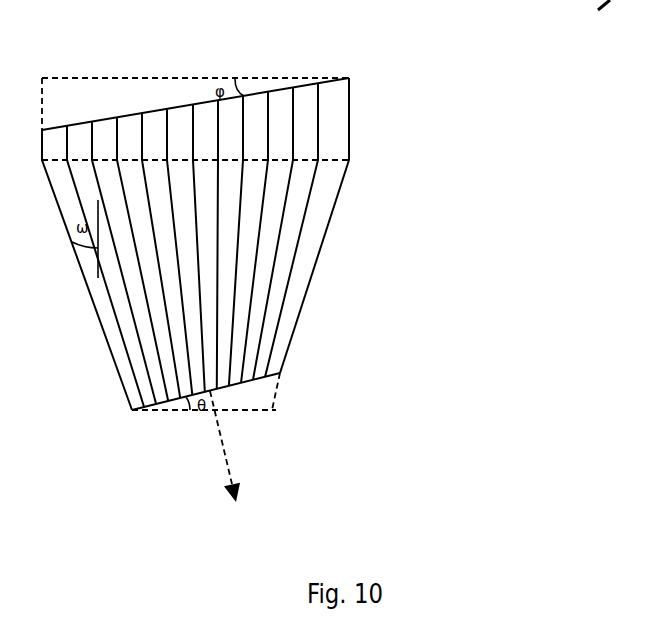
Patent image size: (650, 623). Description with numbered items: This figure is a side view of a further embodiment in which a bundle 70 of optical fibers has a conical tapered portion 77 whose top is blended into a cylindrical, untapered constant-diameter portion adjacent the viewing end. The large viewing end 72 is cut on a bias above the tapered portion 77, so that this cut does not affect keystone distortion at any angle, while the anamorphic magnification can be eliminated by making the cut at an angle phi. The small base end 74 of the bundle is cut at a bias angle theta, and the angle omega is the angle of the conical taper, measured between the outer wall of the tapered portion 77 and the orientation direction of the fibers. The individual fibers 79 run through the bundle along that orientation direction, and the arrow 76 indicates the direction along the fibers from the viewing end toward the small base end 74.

The bundle 70 is at (330, 270).
The large viewing end 72 is at (275, 90).
The small base end 74 is at (228, 387).
The light propagation direction 76 is at (235, 446).
The conical tapered portion 77 is at (296, 328).
The facets 79 is at (310, 130).